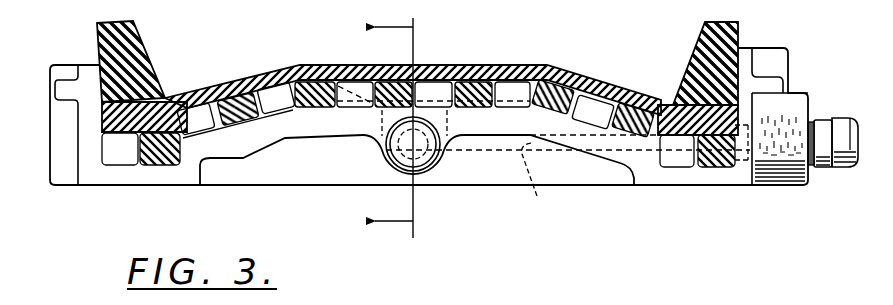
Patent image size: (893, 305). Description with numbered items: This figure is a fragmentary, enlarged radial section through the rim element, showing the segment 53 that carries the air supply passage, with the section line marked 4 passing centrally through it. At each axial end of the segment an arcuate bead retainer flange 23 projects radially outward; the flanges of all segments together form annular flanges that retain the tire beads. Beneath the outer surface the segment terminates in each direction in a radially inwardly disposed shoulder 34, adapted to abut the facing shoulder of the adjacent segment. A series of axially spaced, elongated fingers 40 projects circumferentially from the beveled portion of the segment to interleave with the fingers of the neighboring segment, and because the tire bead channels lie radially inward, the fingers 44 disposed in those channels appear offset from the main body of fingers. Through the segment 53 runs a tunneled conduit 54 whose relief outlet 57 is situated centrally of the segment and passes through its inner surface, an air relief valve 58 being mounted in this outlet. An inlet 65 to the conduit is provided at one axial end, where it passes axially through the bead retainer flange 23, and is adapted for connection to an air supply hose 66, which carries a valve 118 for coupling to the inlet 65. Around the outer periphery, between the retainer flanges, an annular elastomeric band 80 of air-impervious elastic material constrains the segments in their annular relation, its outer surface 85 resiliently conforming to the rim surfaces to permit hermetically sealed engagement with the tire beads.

The section line 4- 4 is at (406, 128).
The bead retainer flange 23 is at (96, 63).
The shoulder 34 is at (328, 136).
The fingers 40 is at (305, 100).
The fingers 44 is at (156, 158).
The segment 53 is at (51, 189).
The tunneled conduit 54 is at (540, 183).
The relief outlet 57 is at (392, 154).
The air relief valve 58 is at (440, 168).
The inlet 65 is at (795, 122).
The air supply hose 66 is at (842, 130).
The annular elastomeric band 80 is at (460, 66).
The outer surface of the band 85 is at (508, 64).
The valve 118 is at (818, 170).